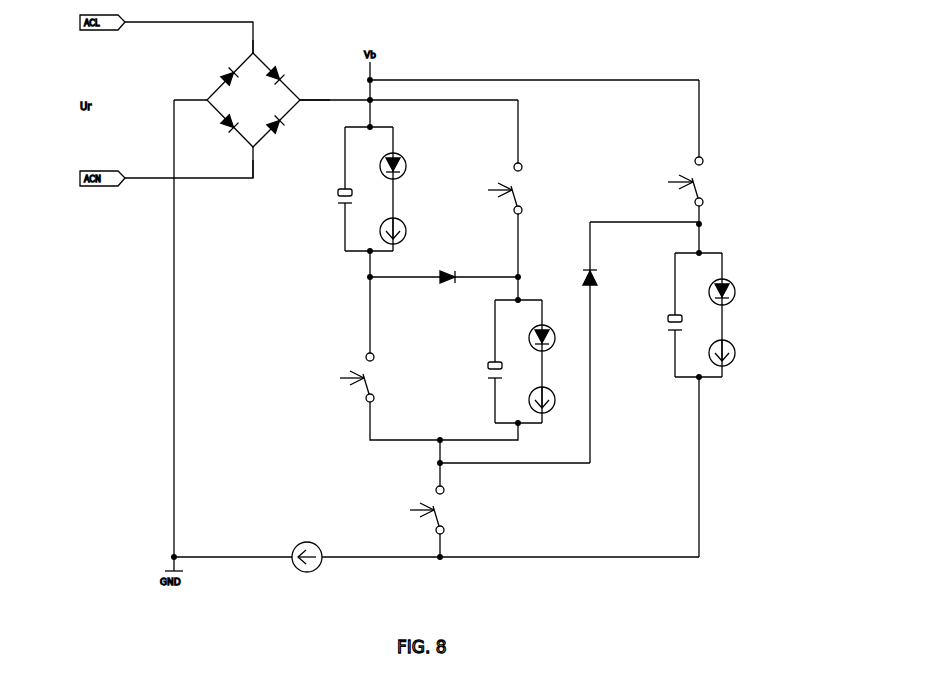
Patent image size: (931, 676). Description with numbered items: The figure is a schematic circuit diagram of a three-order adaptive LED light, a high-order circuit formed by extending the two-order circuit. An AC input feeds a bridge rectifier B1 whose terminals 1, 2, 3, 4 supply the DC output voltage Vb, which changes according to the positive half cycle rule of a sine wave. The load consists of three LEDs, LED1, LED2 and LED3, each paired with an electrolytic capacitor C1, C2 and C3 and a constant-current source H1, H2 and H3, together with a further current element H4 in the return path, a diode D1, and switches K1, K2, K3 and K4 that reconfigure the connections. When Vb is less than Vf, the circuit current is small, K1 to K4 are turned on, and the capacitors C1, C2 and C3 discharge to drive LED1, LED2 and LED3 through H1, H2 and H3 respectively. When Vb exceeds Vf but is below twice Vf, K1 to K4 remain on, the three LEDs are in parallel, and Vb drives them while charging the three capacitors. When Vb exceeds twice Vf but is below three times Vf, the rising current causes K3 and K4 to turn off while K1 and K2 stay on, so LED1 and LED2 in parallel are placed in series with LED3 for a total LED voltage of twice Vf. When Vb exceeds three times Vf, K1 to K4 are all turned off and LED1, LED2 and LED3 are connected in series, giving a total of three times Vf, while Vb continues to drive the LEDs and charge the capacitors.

The bridge rectifier B1 is at (265, 100).
The bridge rectifier AC input terminal 1 is at (246, 40).
The bridge rectifier DC output terminal 2 is at (315, 94).
The bridge rectifier AC input terminal 3 is at (246, 169).
The bridge rectifier DC output terminal 4 is at (190, 94).
The electrolytic capacitor C1 is at (335, 189).
The electrolytic capacitor C2 is at (483, 361).
The electrolytic capacitor C3 is at (664, 315).
The LED LED1 is at (409, 174).
The LED LED2 is at (555, 344).
The LED LED3 is at (738, 301).
The constant-current source H1 is at (401, 231).
The constant-current source H2 is at (549, 405).
The constant-current source H3 is at (730, 354).
The fourth current source H4 is at (315, 552).
The switch K1 is at (511, 188).
The switch K2 is at (363, 377).
The switch K3 is at (691, 181).
The switch K4 is at (432, 510).
The diode D1 is at (490, 342).